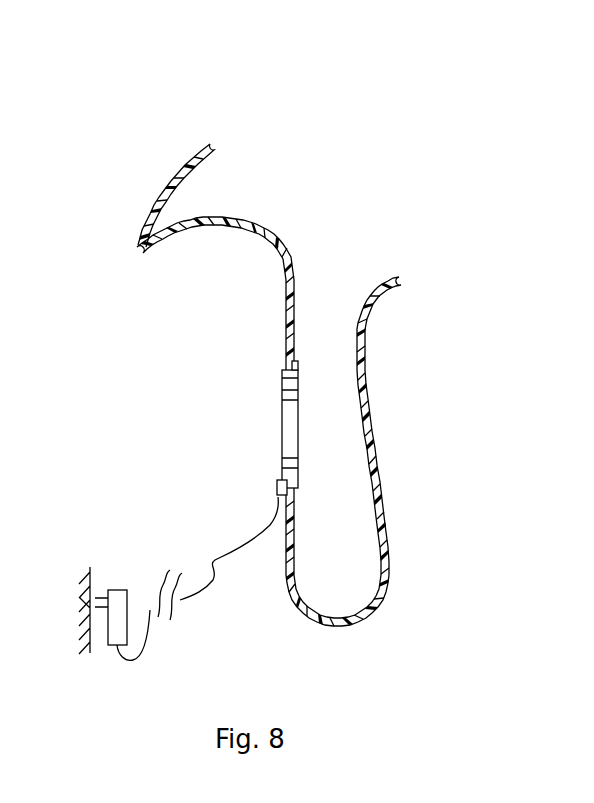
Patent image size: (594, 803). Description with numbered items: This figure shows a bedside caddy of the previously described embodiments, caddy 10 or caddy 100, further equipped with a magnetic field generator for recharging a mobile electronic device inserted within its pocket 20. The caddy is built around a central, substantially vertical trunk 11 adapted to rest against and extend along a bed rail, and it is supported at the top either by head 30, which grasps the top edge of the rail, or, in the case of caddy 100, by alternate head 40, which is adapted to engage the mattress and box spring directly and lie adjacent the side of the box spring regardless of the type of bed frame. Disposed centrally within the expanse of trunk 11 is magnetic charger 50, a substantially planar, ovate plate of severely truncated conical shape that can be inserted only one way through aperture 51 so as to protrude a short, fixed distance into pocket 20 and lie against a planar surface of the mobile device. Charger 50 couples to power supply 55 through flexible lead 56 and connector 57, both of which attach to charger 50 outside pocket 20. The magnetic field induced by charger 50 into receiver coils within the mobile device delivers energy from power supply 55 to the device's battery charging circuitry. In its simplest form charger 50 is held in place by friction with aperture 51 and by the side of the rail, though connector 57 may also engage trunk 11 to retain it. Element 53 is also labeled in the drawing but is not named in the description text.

The caddy 10 is at (295, 351).
The caddy 100 is at (295, 351).
The trunk 11 is at (284, 277).
The pocket 20 is at (383, 502).
The head 30 is at (250, 145).
The alternate head 40 is at (243, 150).
The magnetic charger 50 is at (302, 460).
The aperture 51 is at (322, 290).
The hub 53 is at (285, 365).
The power supply 55 is at (118, 588).
The flexible lead 56 is at (210, 600).
The connector 57 is at (277, 488).